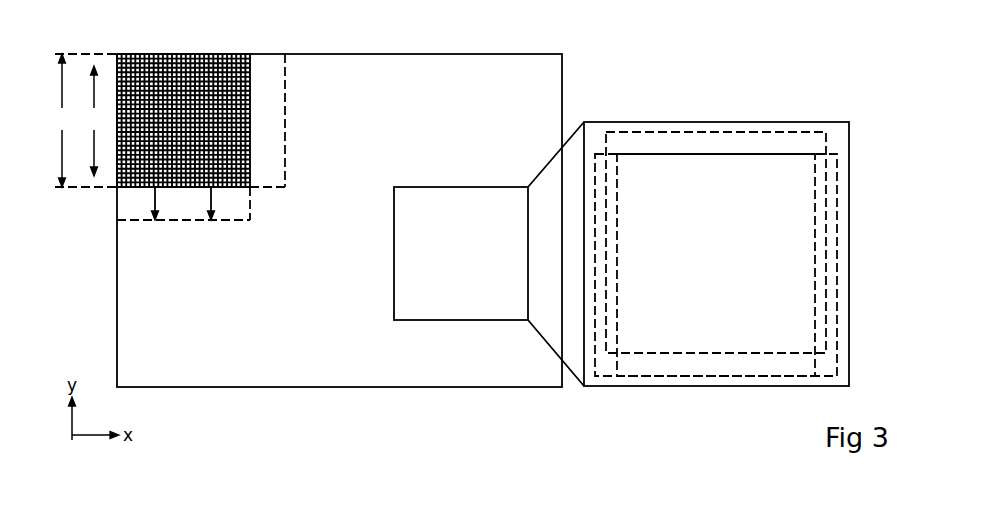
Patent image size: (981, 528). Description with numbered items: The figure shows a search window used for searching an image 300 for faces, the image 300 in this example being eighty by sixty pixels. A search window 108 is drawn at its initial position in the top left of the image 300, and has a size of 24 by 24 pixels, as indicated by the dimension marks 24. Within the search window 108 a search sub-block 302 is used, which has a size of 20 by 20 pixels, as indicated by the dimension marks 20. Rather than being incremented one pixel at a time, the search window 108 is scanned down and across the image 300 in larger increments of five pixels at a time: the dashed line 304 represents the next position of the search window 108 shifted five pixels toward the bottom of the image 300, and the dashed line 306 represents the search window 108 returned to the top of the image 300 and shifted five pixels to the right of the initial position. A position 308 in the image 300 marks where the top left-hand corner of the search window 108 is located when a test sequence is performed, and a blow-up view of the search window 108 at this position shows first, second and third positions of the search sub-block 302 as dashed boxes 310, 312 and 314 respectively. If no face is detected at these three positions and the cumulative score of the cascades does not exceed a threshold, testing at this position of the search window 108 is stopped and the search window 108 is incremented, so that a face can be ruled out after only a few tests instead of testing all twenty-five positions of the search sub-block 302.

The image 300 is at (562, 54).
The search sub-block 302 is at (170, 54).
The search window 108 is at (227, 54).
The dashed line 304 is at (225, 220).
The dashed line 306 is at (285, 118).
The position 308 is at (394, 187).
The dashed box 310 is at (782, 132).
The dashed box 312 is at (815, 200).
The dashed box 314 is at (837, 254).
The pixel dimension 24 is at (84, 120).
The pixel dimension 20 is at (94, 121).